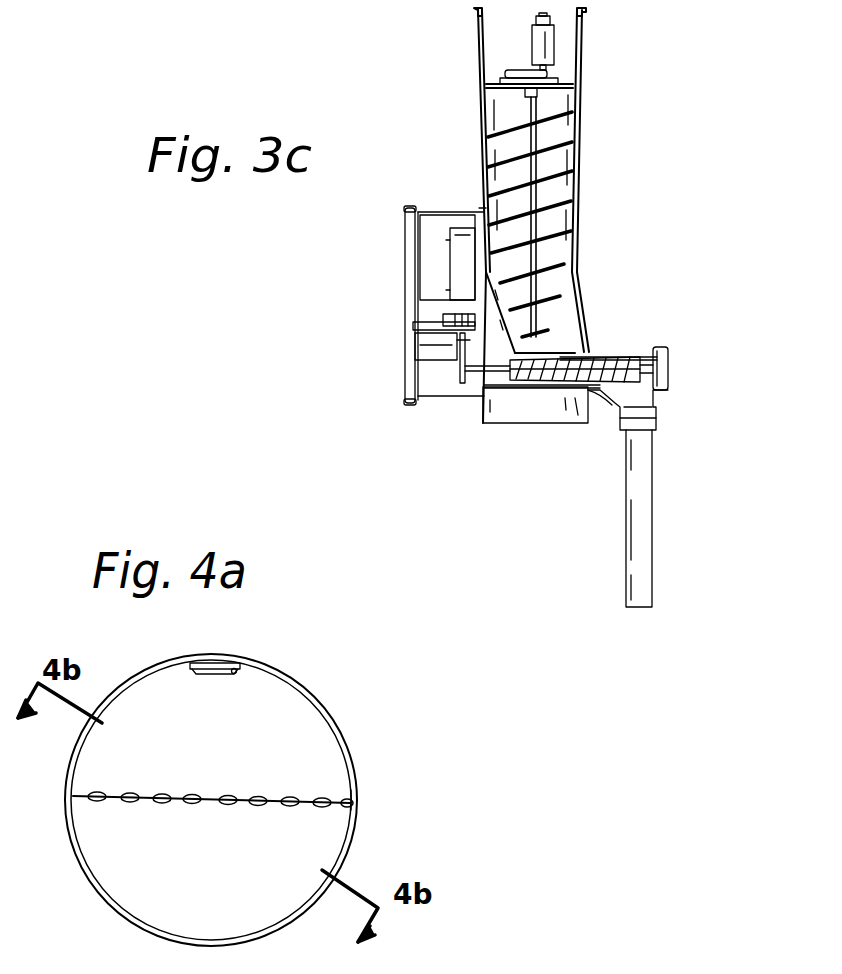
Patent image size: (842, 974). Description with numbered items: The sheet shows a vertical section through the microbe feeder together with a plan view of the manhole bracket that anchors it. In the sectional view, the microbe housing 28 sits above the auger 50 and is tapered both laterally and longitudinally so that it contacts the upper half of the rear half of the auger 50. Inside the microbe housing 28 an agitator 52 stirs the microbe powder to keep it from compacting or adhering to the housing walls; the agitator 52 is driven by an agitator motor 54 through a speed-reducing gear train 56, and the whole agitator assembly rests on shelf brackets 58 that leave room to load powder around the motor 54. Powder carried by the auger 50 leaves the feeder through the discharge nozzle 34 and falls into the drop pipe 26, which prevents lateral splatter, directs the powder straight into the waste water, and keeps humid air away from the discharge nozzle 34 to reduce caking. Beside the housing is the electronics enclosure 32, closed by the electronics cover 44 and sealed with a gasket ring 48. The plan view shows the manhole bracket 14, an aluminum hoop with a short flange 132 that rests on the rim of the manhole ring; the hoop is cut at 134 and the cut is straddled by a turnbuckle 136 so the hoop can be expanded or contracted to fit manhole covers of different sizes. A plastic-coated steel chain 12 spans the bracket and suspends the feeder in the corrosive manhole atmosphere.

In FIG. 4A, the chain 12 is at (298, 811).
In FIG. 4A, the manhole bracket 14 is at (341, 718).
In FIG. 3C, the drop pipe 26 is at (654, 523).
In FIG. 3C, the microbe housing 28 is at (580, 190).
In FIG. 3C, the electronics enclosure 32 is at (463, 210).
In FIG. 3C, the discharge nozzle 34 is at (662, 398).
In FIG. 3C, the electronics cover 44 is at (405, 265).
In FIG. 3C, the gasket ring 48 is at (420, 212).
In FIG. 3C, the auger 50 is at (602, 350).
In FIG. 3C, the agitator 52 is at (533, 222).
In FIG. 3C, the agitator motor 54 is at (560, 62).
In FIG. 3C, the speed-reducing gear train 56 is at (513, 72).
In FIG. 3C, the shelf brackets 58 is at (563, 89).
In FIG. 4A, the flange 132 is at (353, 825).
In FIG. 4A, the cut 134 is at (218, 655).
In FIG. 4A, the turnbuckle 136 is at (247, 671).